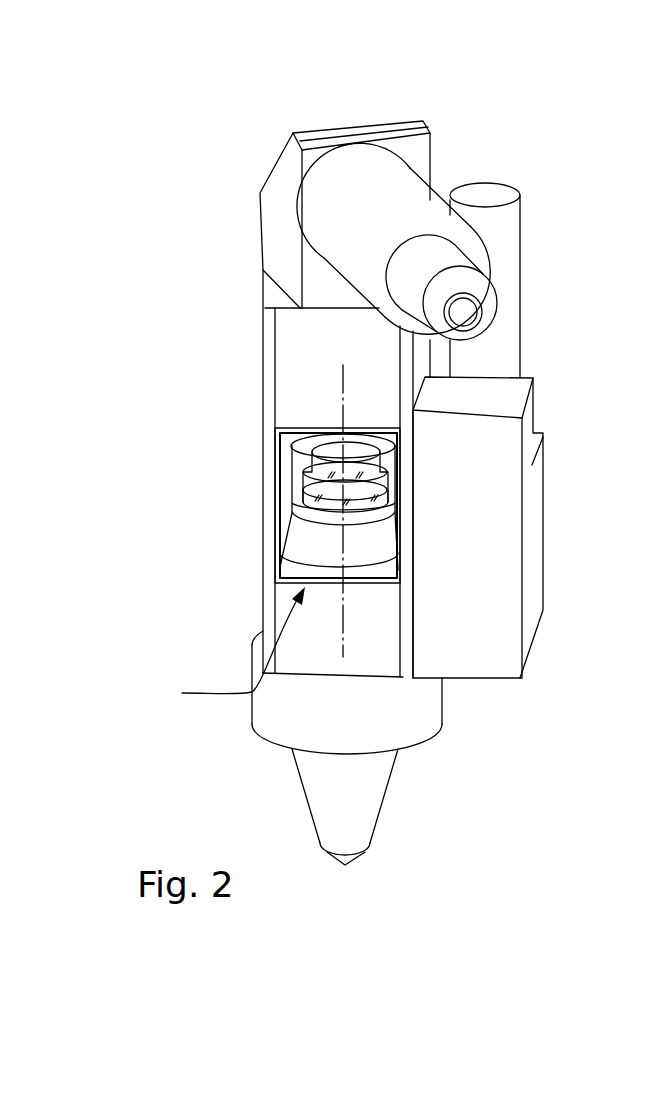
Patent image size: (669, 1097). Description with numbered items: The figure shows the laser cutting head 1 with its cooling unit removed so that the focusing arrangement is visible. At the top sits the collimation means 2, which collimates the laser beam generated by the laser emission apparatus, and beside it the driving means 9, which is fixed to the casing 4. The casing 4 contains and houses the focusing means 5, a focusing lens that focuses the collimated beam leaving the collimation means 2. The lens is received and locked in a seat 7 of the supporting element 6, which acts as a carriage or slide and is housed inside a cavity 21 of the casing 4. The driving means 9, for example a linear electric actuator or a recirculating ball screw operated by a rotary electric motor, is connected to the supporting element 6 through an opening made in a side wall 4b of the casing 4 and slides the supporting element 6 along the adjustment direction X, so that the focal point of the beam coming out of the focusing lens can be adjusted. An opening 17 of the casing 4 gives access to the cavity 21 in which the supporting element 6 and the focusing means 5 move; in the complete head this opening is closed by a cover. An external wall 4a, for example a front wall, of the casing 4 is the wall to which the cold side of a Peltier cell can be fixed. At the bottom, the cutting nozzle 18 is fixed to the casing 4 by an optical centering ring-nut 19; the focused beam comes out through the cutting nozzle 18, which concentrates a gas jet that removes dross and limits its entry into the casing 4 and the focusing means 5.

The laser cutting head 1 is at (200, 138).
The collimation means 2 is at (415, 195).
The casing 4 is at (270, 300).
The external wall 4a is at (305, 372).
The side wall 4b is at (423, 357).
The focusing means 5 is at (355, 508).
The supporting element 6 is at (370, 553).
The seat 7 is at (375, 487).
The driving means 9 is at (512, 240).
The opening 17 is at (224, 649).
The cutting nozzle 18 is at (357, 810).
The optical centering ring-nut 19 is at (420, 720).
The cavity 21 is at (283, 505).
The adjustment direction X is at (343, 610).